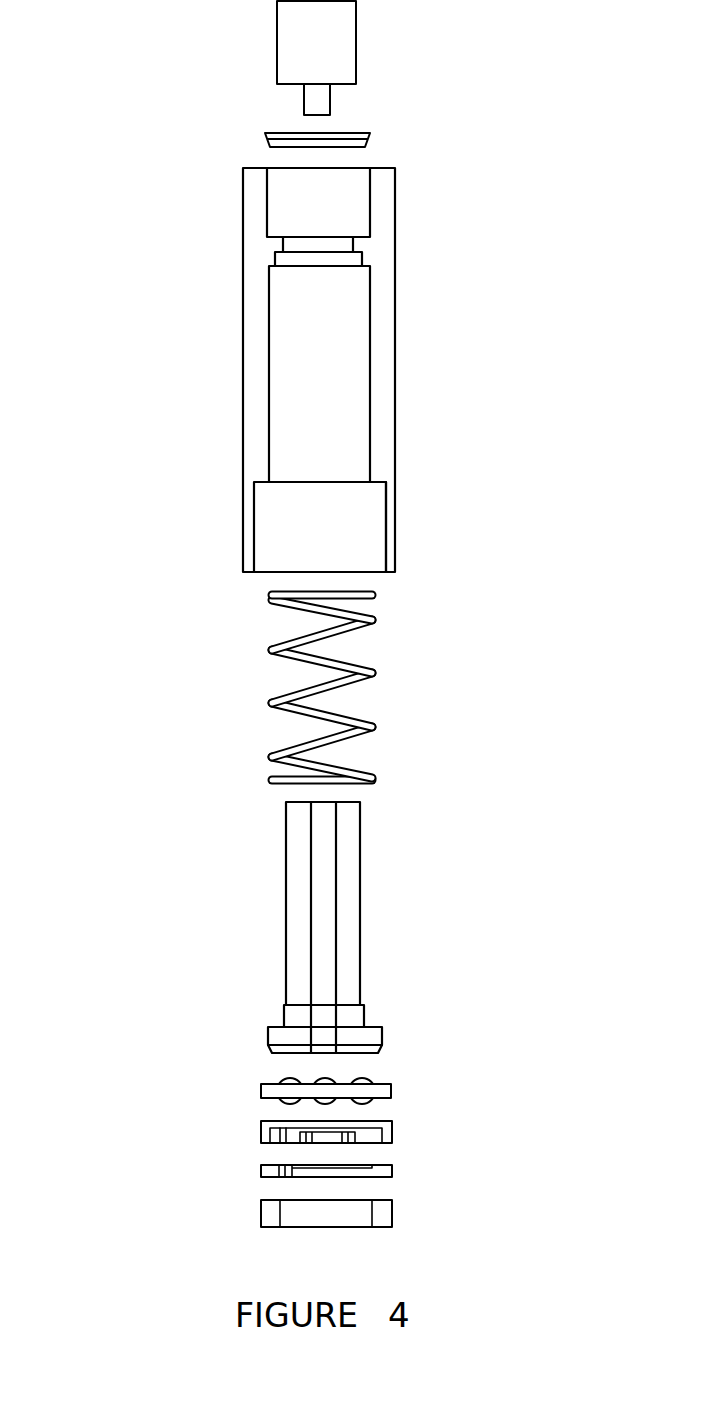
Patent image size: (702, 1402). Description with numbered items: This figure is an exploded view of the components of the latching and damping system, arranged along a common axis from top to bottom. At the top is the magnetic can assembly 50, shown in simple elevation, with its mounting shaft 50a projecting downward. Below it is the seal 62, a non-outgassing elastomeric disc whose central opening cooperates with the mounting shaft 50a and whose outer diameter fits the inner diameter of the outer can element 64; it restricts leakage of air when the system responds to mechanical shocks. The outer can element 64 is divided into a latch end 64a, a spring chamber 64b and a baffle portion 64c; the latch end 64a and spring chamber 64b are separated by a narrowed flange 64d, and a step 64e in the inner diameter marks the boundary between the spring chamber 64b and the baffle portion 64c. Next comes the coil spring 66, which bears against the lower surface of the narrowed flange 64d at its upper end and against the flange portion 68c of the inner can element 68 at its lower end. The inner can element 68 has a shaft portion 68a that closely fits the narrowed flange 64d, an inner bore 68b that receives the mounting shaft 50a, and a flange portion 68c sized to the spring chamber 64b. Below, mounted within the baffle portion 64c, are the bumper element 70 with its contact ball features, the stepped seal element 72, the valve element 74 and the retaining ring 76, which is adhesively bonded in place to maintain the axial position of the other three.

The magnetic can assembly 50 is at (341, 42).
The mounting shaft 50a is at (320, 99).
The seal 62 is at (413, 139).
The outer can element 64 is at (416, 378).
The latch end 64a is at (180, 165).
The spring chamber 64b is at (180, 250).
The baffle portion 64c is at (180, 475).
The narrowed flange 64d is at (369, 248).
The step 64e is at (387, 465).
The coil spring 66 is at (418, 693).
The inner can element 68 is at (420, 913).
The shaft portion 68a is at (189, 803).
The inner bore 68b is at (327, 840).
The flange portion 68c is at (282, 1037).
The bumper element 70 is at (422, 1092).
The stepped seal element 72 is at (422, 1135).
The valve element 74 is at (422, 1171).
The retaining ring 76 is at (422, 1213).